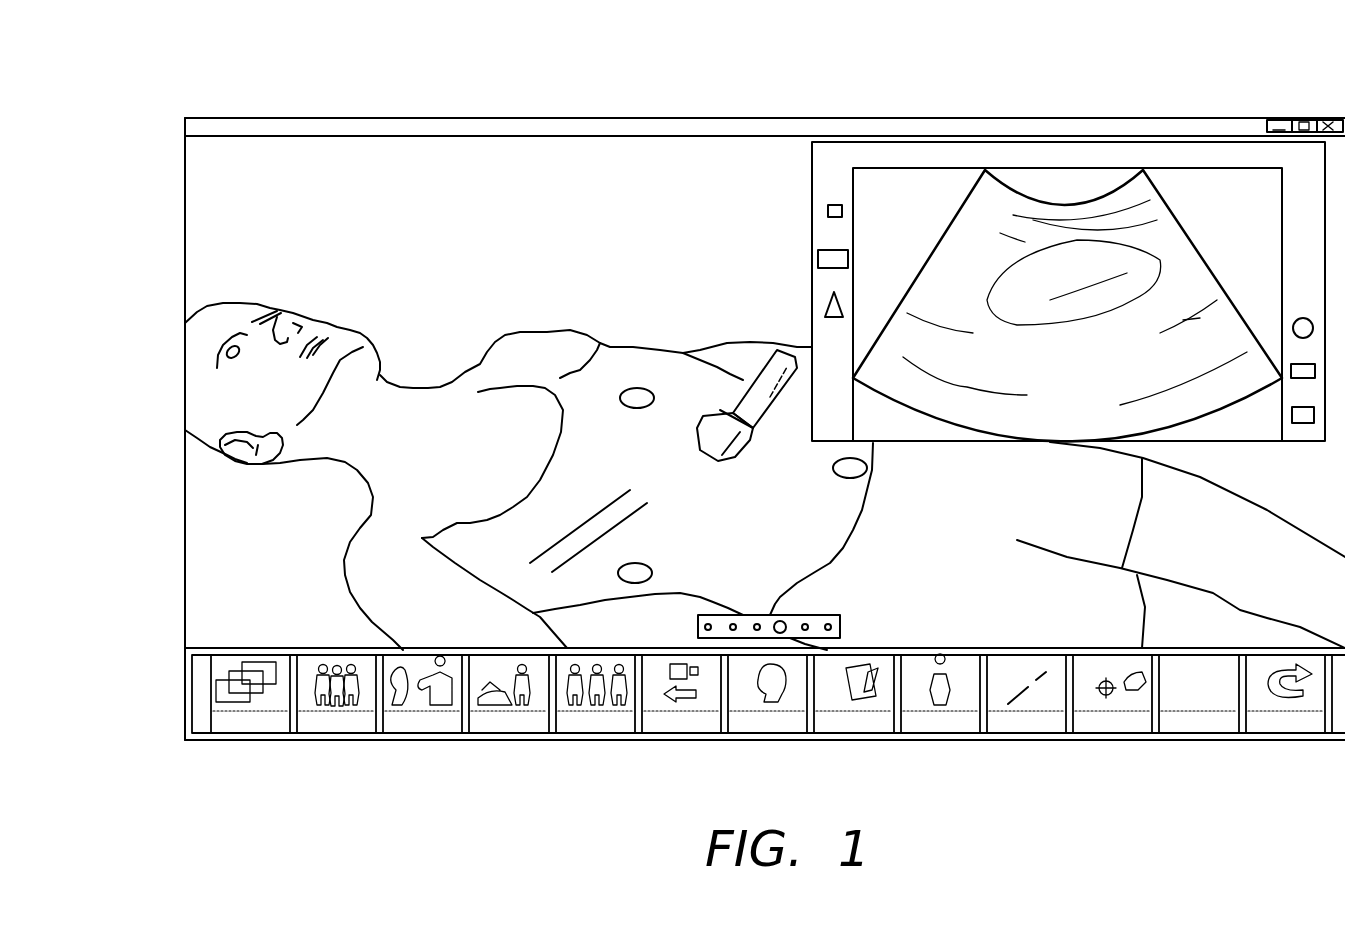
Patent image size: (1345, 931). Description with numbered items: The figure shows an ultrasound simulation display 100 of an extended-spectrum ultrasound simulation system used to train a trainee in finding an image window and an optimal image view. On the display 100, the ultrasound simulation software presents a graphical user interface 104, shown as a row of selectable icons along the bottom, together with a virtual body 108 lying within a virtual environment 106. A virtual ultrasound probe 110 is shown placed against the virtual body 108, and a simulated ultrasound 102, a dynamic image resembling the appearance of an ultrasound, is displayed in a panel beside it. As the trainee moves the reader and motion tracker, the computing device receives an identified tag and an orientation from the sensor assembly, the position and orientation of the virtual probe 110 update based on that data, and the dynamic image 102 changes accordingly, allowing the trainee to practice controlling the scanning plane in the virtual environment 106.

The display 100 is at (1203, 740).
The simulated ultrasound 102 is at (1082, 168).
The graphical user interface 104 is at (672, 720).
The virtual environment 106 is at (483, 155).
The virtual body 108 is at (714, 483).
The virtual ultrasound probe 110 is at (742, 245).